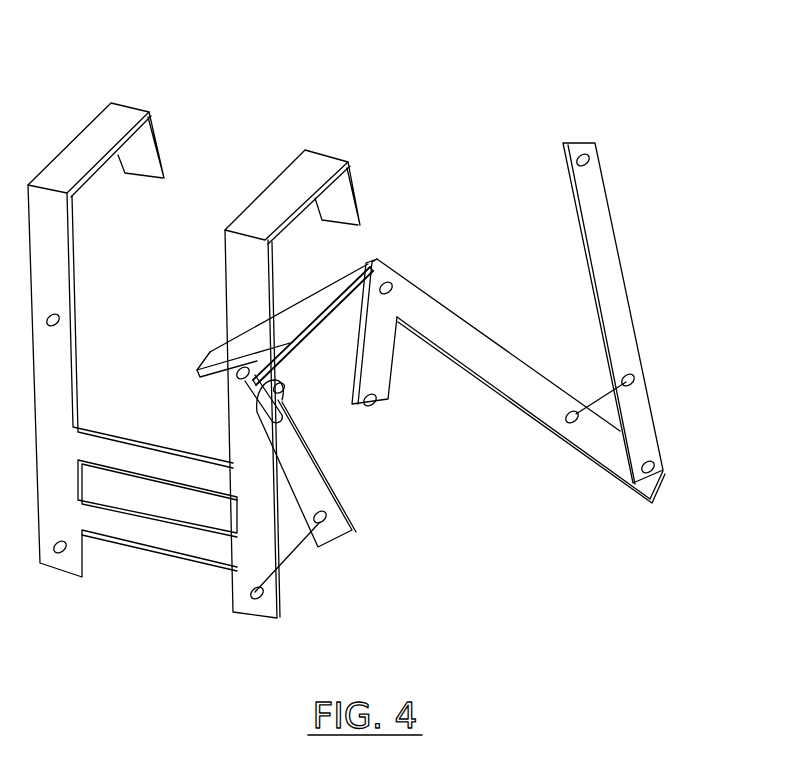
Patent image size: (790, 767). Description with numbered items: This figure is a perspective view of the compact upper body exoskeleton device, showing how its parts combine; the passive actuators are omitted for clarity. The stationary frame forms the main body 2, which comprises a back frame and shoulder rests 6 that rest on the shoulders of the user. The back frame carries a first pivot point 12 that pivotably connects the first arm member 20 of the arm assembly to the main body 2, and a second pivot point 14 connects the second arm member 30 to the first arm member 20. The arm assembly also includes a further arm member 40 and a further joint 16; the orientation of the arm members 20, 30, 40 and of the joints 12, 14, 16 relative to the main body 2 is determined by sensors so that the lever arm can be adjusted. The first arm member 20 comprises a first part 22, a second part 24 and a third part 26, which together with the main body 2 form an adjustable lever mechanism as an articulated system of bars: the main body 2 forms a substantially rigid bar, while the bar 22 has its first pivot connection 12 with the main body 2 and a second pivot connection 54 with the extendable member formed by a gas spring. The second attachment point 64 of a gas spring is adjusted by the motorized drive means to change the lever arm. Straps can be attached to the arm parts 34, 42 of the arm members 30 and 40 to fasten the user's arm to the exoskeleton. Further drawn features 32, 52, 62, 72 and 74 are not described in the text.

The main body 2 is at (224, 106).
The shoulder rests 6 is at (72, 164).
The first pivot point 12 is at (242, 378).
The second pivot point 14 is at (389, 285).
The joint 16 is at (656, 475).
The first arm member 20 is at (329, 497).
The first part 22 is at (308, 488).
The second part 24 is at (288, 333).
The third part 26 is at (323, 335).
The second arm member 30 is at (544, 350).
The first lever arm 32 is at (388, 360).
The arm part 34 is at (480, 352).
The arm member 40 is at (650, 350).
The arm part 42 is at (600, 244).
The rail hole 52 is at (256, 597).
The second pivot connection 54 is at (326, 522).
The bracket pivot hole 62 is at (279, 394).
The second attachment point 64 is at (374, 402).
The lever pivot hole 72 is at (568, 438).
The plate pivot hole 74 is at (632, 379).